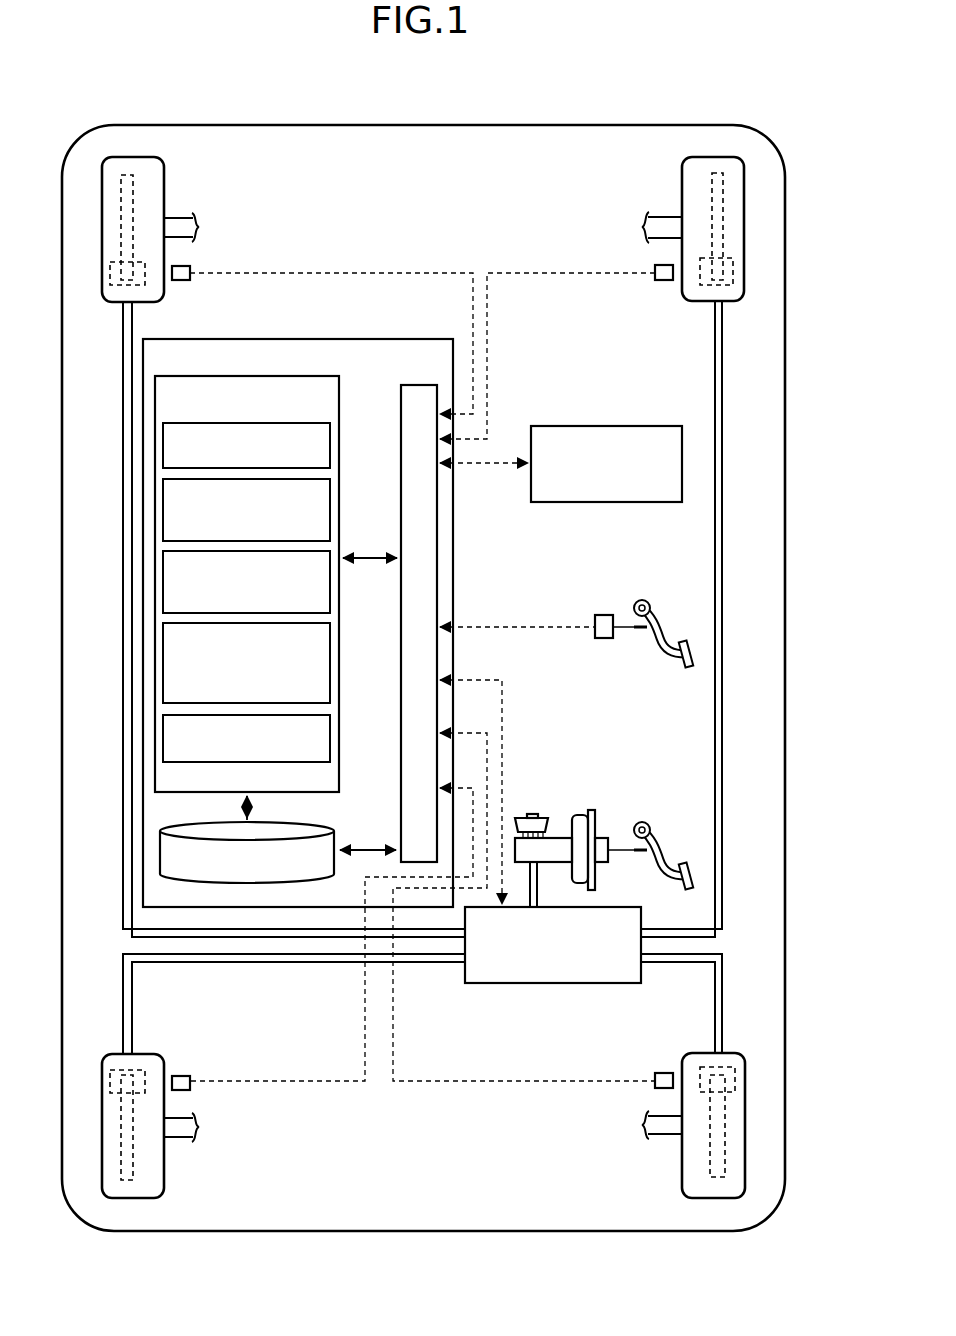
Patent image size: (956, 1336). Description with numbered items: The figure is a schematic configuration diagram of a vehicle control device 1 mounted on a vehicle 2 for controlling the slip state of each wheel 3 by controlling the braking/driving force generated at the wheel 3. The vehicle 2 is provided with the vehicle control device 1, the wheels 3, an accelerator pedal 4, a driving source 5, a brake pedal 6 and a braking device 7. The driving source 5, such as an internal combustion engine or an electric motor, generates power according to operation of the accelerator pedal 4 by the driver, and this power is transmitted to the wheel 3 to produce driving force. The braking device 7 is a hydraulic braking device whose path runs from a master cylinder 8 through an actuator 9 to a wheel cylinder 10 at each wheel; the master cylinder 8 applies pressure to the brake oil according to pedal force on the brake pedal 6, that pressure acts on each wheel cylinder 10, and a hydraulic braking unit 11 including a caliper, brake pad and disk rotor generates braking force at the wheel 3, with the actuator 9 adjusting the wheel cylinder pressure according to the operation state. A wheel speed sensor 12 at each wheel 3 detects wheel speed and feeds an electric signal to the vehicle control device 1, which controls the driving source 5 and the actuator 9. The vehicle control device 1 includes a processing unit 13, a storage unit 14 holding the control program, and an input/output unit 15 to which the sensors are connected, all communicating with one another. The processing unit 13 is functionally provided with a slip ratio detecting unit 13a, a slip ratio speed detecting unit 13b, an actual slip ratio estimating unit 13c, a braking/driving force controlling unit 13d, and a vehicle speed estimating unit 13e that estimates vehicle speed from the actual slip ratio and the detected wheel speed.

The vehicle control device 1 is at (301, 338).
The vehicle 2 is at (586, 106).
The wheel 3 is at (165, 185).
The accelerator pedal 4 is at (656, 606).
The driving source 5 is at (646, 425).
The brake pedal 6 is at (656, 827).
The braking device 7 is at (730, 741).
The master cylinder 8 is at (557, 837).
The actuator 9 is at (604, 984).
The wheel cylinder 10 is at (115, 290).
The hydraulic braking unit 11 is at (176, 165).
The wheel speed sensor 12 is at (181, 281).
The processing unit 13 is at (274, 584).
The slip ratio detecting unit 13a is at (331, 445).
The slip ratio speed detecting unit 13b is at (331, 509).
The actual slip ratio estimating unit 13c is at (331, 582).
The braking/driving force controlling unit 13d is at (331, 663).
The vehicle speed estimating unit 13e is at (331, 736).
The storage unit 14 is at (335, 836).
The input/output unit 15 is at (430, 384).